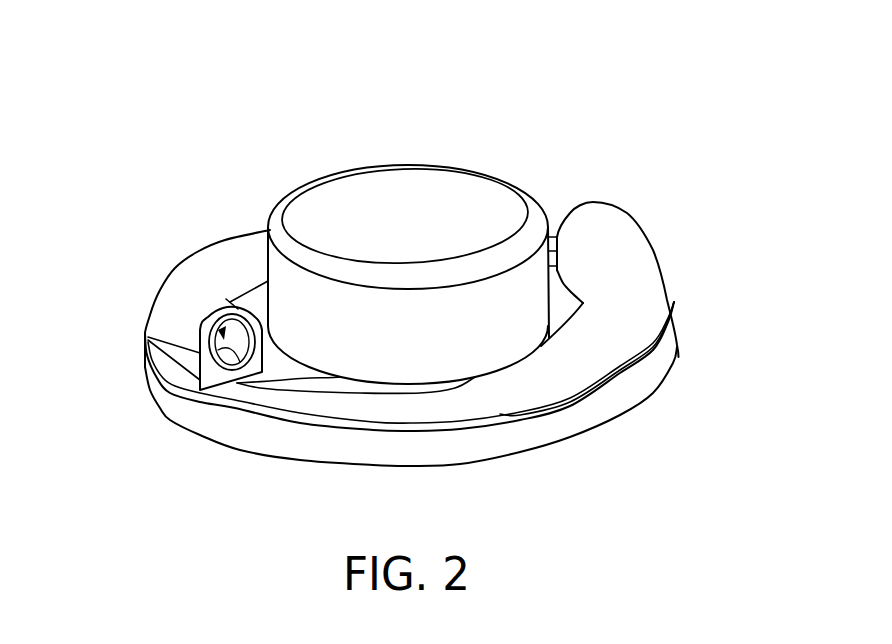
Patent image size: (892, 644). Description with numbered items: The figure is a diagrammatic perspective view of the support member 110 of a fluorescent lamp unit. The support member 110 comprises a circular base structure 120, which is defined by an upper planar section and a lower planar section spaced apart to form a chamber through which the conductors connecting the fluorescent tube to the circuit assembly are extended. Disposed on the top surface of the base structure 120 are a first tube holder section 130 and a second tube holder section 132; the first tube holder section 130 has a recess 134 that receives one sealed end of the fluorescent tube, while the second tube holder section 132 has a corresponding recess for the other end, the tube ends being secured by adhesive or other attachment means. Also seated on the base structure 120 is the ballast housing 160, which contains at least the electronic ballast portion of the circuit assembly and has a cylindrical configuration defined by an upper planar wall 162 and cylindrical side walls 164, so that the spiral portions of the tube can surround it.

The support member 110 is at (510, 125).
The circular base structure 120 is at (632, 393).
The first tube holder section 130 is at (207, 326).
The second tube holder section 132 is at (602, 243).
The recess 134 is at (232, 305).
The ballast housing 160 is at (443, 213).
The upper planar wall 162 is at (395, 228).
The cylindrical side walls 164 is at (445, 342).